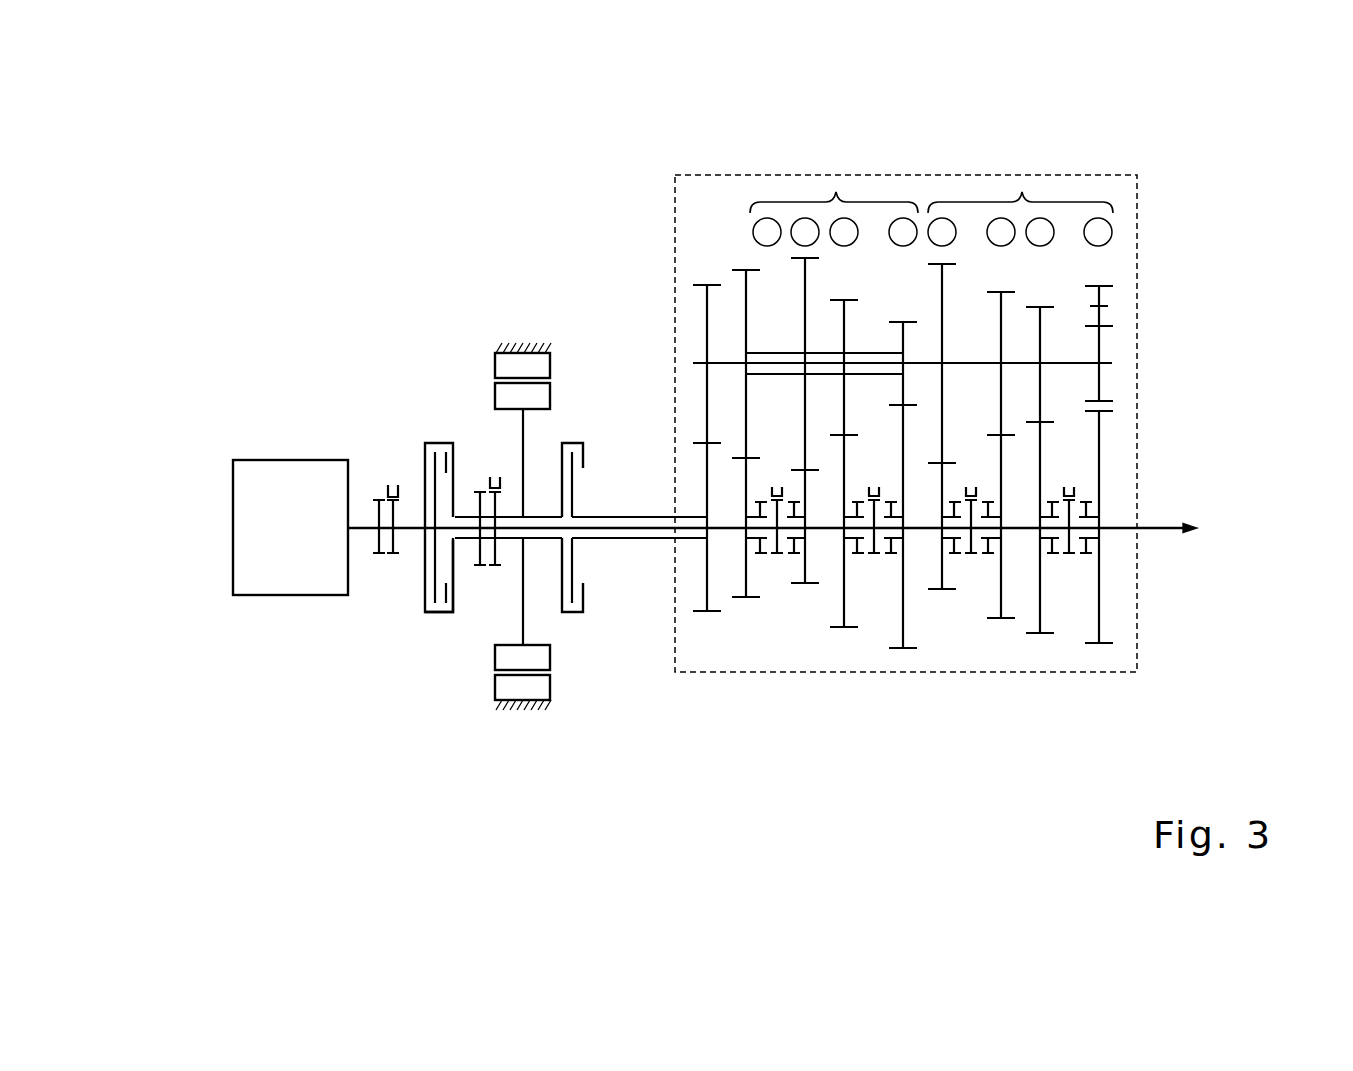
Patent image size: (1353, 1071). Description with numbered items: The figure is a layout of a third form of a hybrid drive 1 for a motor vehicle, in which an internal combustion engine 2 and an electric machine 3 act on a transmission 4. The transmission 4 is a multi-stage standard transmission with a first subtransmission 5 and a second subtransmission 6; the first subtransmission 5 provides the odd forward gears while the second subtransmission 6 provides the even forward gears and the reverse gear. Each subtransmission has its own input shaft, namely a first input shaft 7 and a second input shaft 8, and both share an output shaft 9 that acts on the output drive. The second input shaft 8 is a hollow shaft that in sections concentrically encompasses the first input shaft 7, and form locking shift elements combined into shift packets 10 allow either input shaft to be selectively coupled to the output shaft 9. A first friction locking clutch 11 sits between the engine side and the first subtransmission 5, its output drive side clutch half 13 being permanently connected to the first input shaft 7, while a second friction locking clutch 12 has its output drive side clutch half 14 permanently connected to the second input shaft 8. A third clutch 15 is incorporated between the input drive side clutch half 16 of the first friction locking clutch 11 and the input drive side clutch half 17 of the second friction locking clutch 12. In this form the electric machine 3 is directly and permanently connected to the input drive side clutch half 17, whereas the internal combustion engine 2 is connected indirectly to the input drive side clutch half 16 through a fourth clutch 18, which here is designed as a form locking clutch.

The hybrid drive 1 is at (239, 230).
The internal combustion engine 2 is at (284, 572).
The electric machine 3 is at (523, 335).
The transmission 4 is at (1137, 195).
The first subtransmission 5 is at (834, 195).
The second subtransmission 6 is at (1020, 195).
The first input shaft 7 is at (683, 530).
The second input shaft 8 is at (615, 540).
The output shaft 9 is at (1151, 528).
The shift packets 10 is at (777, 580).
The first friction locking clutch 11 is at (433, 432).
The second friction locking clutch 12 is at (572, 425).
The output drive side clutch half 13 is at (435, 492).
The output drive side clutch half 14 is at (573, 495).
The third clutch 15 is at (483, 467).
The input drive side clutch half 16 is at (453, 603).
The input drive side clutch half 17 is at (560, 578).
The fourth clutch 18 is at (383, 560).